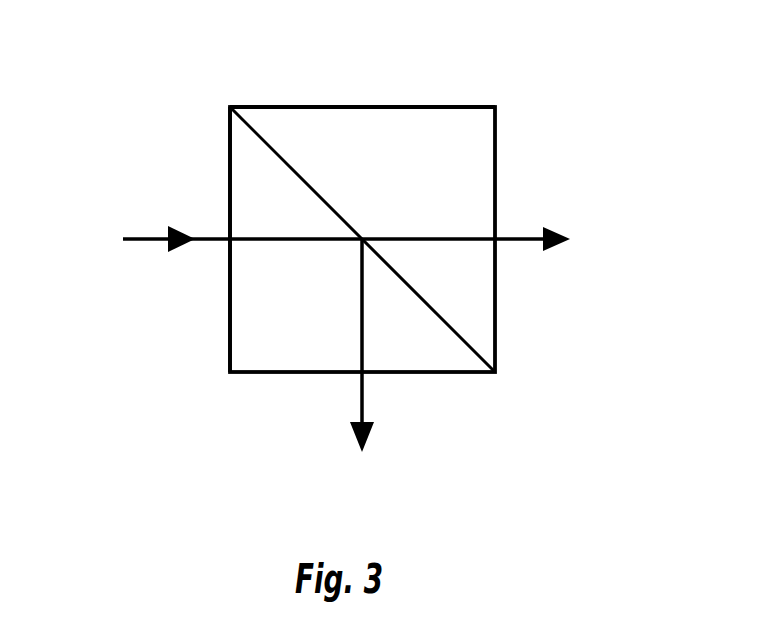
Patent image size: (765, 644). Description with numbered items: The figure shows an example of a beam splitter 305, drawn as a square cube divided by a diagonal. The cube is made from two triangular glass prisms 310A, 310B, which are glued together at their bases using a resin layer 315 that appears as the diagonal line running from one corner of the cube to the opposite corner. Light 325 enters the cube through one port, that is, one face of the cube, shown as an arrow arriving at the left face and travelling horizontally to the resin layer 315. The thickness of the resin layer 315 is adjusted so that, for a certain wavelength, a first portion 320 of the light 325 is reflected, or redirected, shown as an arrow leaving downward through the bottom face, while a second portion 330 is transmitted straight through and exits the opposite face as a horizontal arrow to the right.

The beam splitter 305 is at (463, 375).
The triangular glass prism 310A is at (222, 188).
The triangular glass prism 310B is at (343, 102).
The resin layer 315 is at (335, 197).
The first portion 320 is at (345, 393).
The light 325 is at (147, 252).
The second portion 330 is at (537, 225).